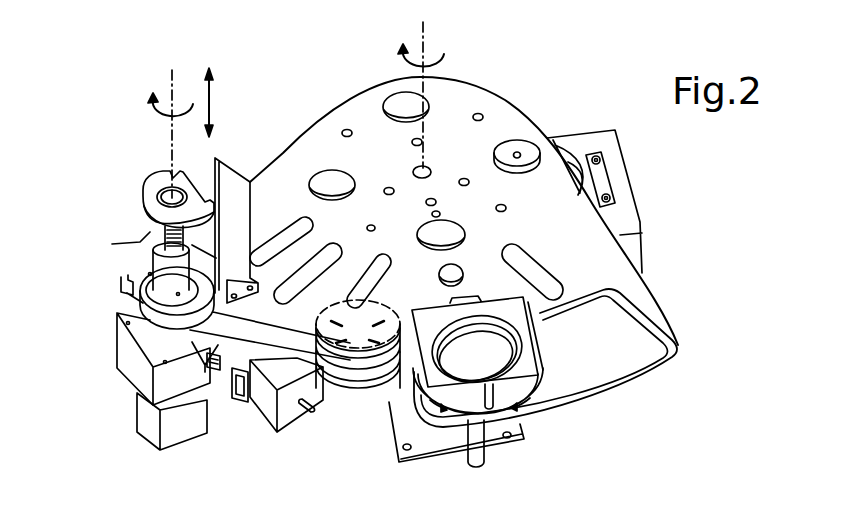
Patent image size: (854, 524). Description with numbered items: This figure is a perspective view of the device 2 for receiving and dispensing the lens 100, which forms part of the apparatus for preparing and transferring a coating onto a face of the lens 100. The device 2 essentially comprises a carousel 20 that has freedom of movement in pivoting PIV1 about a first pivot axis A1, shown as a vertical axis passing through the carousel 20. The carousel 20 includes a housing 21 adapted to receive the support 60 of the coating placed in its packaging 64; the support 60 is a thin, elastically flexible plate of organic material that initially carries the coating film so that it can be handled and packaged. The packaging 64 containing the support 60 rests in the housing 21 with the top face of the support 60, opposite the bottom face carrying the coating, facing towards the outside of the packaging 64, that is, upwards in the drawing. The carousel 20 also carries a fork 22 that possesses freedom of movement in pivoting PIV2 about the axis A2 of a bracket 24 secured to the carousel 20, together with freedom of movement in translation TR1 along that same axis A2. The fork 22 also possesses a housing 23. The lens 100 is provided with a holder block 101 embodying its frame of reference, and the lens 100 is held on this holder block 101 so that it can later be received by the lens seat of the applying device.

The device for receiving and dispensing the lens 2 is at (504, 97).
The carousel 20 is at (583, 228).
The housing 21 is at (464, 407).
The fork 22 is at (122, 352).
The housing 23 is at (364, 370).
The bracket 24 is at (160, 224).
The support 60 is at (500, 342).
The packaging 64 is at (535, 367).
The lens 100 is at (344, 308).
The holder block 101 is at (350, 355).
The first pivot axis A1 is at (423, 33).
The axis of the bracket A2 is at (172, 90).
The pivoting movement of the carousel PIV1 is at (416, 67).
The pivoting movement of the fork PIV2 is at (165, 120).
The translation movement of the fork TR1 is at (212, 100).